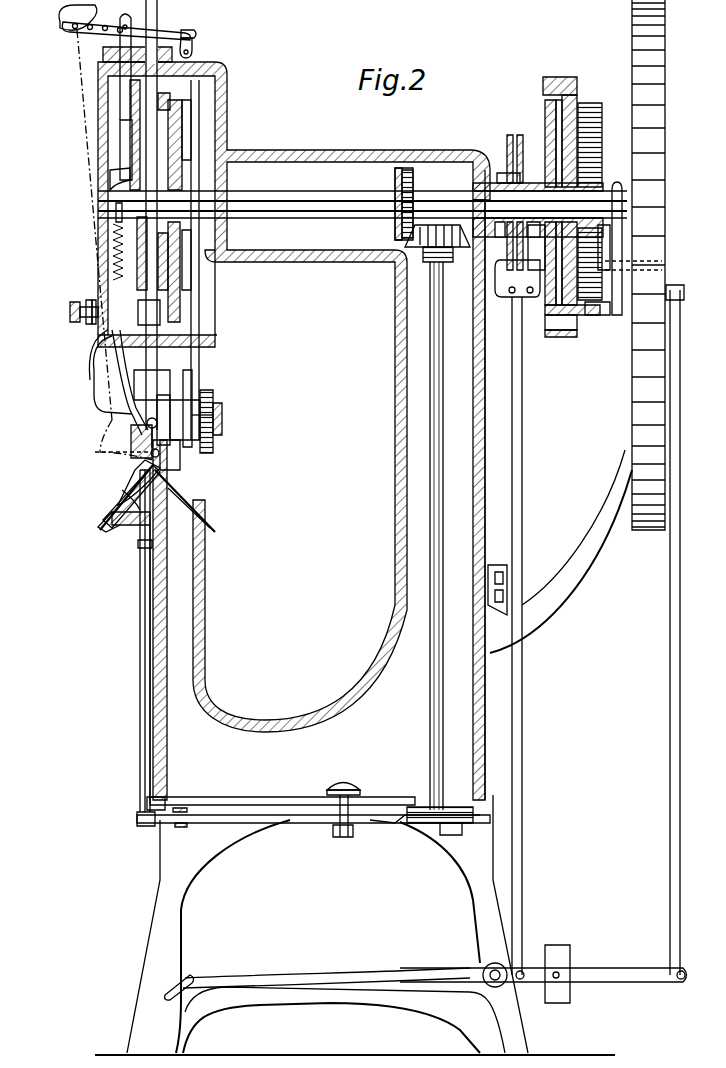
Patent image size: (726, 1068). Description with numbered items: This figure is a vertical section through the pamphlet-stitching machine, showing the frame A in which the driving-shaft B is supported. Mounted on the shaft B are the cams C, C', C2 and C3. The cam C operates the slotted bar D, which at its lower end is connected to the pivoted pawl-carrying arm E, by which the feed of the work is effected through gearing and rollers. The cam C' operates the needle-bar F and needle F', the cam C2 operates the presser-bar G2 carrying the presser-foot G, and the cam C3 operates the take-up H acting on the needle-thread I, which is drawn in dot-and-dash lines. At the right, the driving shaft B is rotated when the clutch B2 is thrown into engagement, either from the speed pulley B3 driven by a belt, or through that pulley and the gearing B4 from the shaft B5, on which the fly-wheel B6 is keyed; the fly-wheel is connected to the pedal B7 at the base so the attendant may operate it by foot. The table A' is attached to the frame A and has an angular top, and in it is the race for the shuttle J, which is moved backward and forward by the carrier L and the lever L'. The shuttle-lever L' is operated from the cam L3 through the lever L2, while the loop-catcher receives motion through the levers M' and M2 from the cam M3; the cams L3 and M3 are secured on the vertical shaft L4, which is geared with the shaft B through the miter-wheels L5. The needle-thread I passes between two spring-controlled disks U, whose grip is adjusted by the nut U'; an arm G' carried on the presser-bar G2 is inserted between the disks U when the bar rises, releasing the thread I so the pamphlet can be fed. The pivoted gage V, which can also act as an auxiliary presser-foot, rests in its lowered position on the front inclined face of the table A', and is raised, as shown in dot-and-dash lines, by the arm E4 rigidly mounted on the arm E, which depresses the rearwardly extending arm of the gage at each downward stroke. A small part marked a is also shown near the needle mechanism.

The frame A is at (294, 422).
The table A' is at (159, 498).
The driving-shaft B is at (322, 198).
The clutch B2 is at (512, 140).
The speed pulley B3 is at (577, 85).
The gearing B4 is at (605, 300).
The shaft B5 is at (612, 270).
The fly-wheel B6 is at (586, 487).
The pedal B7 is at (195, 978).
The cam C is at (186, 191).
The cam C' is at (211, 176).
The cam C2 is at (130, 178).
The cam C3 is at (132, 103).
The bar D is at (197, 360).
The pawl-carrying arm E is at (205, 405).
The arm E4 is at (222, 420).
The needle-bar F is at (193, 318).
The needle F' is at (191, 458).
The presser-foot G is at (171, 452).
The arm G' is at (96, 372).
The presser-bar G2 is at (128, 390).
The take-up H is at (100, 42).
The needle-thread I is at (80, 150).
The shuttle J is at (140, 490).
The carrier L is at (132, 620).
The shuttle-lever L' is at (129, 641).
The lever L2 is at (305, 822).
The cam L3 is at (425, 825).
The vertical shaft L4 is at (438, 702).
The miter-wheels L5 is at (398, 232).
The lever M' is at (132, 662).
The lever M2 is at (285, 803).
The cam M3 is at (395, 800).
The disks U is at (67, 326).
The nut U' is at (72, 305).
The gage V is at (126, 498).
The plate a is at (161, 414).